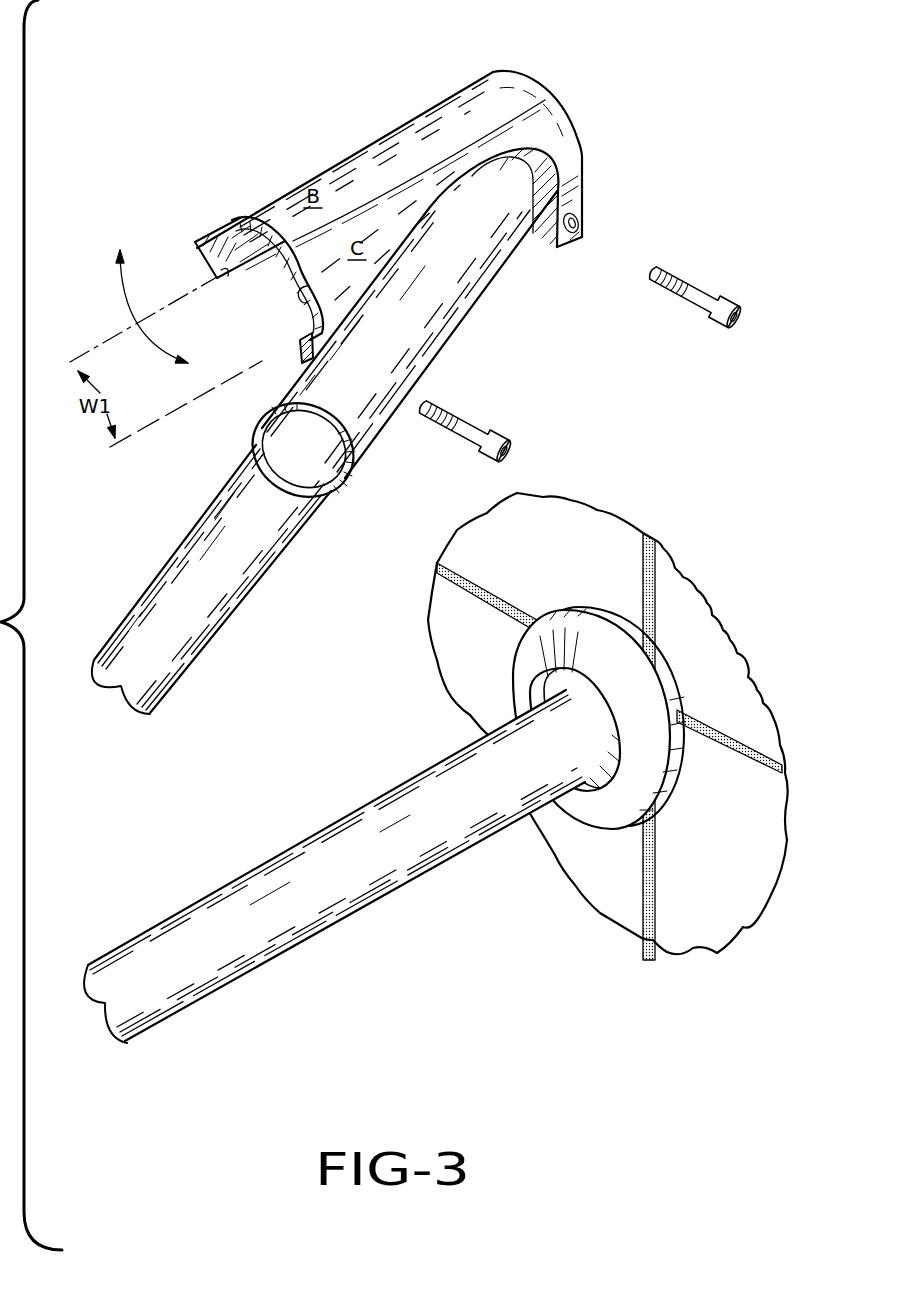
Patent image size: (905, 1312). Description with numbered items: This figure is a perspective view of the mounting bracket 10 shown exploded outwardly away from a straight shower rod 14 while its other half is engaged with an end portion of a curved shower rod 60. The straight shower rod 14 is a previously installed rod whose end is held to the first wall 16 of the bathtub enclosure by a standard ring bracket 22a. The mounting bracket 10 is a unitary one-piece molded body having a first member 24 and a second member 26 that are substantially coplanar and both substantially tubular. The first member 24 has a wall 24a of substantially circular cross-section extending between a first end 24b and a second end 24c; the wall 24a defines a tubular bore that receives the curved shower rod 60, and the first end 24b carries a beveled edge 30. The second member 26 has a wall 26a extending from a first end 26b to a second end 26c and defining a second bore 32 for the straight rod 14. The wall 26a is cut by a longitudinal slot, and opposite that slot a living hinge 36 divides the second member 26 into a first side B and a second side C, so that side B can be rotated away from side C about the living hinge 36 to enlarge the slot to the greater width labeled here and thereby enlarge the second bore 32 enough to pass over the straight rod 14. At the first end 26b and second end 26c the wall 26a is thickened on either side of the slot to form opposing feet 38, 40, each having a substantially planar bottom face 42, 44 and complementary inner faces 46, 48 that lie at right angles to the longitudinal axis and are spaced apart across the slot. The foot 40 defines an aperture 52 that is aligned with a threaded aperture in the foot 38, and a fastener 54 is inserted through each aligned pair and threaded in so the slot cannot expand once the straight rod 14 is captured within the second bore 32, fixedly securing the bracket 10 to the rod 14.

The mounting bracket 10 is at (387, 118).
The straight shower rod 14 is at (313, 828).
The first wall 16 is at (533, 561).
The ring bracket 22a is at (633, 692).
The first member 24 is at (466, 318).
The wall 24a is at (460, 297).
The first end 24b is at (352, 444).
The second end 24c is at (530, 153).
The second member 26 is at (357, 137).
The wall 26a is at (350, 175).
The first end 26b is at (240, 218).
The second end 26c is at (516, 75).
The beveled edge 30 is at (340, 480).
The second bore 32 is at (312, 300).
The living hinge 36 is at (450, 97).
The foot 38 is at (200, 232).
The foot 40 is at (297, 337).
The bottom face 42 is at (200, 258).
The bottom face 44 is at (543, 242).
The inner face 46 is at (223, 280).
The inner face 48 is at (300, 343).
The aperture 52 is at (575, 236).
The fastener 54 is at (712, 295).
The curved shower rod 60 is at (203, 653).